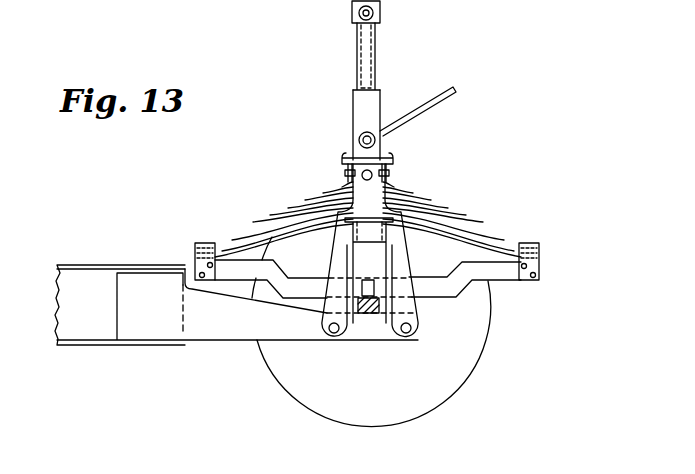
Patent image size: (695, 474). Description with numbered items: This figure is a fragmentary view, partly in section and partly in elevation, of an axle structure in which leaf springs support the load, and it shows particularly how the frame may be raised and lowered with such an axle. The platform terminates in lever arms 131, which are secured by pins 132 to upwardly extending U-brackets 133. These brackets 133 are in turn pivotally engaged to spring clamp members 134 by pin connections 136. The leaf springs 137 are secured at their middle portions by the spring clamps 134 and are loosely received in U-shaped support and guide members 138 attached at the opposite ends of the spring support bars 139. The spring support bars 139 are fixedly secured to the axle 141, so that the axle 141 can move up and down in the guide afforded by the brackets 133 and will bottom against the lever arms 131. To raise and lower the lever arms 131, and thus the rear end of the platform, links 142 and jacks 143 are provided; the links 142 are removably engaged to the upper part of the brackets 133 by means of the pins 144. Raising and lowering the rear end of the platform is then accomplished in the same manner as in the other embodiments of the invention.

The lever arms 131 is at (228, 328).
The pins 132 is at (327, 333).
The U-brackets 133 is at (410, 308).
The spring clamp members 134 is at (347, 178).
The pin connections 136 is at (353, 157).
The leaf springs 137 is at (422, 205).
The U-shaped support and guide members 138 is at (210, 243).
The spring support bars 139 is at (498, 275).
The axle 141 is at (393, 332).
The links 142 is at (410, 80).
The jacks 143 is at (380, 112).
The pins 144 is at (381, 132).